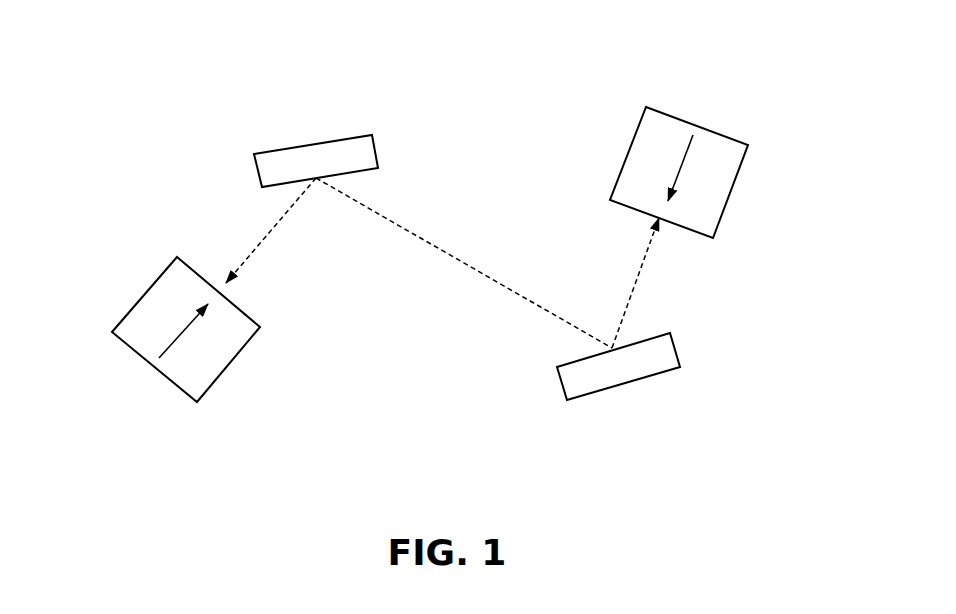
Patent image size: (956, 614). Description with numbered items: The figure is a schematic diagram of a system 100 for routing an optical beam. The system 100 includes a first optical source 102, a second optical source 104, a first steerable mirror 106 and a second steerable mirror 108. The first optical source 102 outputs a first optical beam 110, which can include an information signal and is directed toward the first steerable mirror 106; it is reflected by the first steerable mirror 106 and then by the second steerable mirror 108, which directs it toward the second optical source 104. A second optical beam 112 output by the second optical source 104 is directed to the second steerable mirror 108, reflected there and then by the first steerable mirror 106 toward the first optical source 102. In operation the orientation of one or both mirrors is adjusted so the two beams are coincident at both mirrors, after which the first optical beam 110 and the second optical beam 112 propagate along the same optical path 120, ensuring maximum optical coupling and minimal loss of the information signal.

The system 100 is at (128, 68).
The first optical source 102 is at (175, 387).
The second optical source 104 is at (627, 157).
The first steerable mirror 106 is at (317, 143).
The second steerable mirror 108 is at (617, 385).
The first optical beam 110 is at (177, 335).
The second optical beam 112 is at (682, 168).
The optical path 120 is at (432, 246).